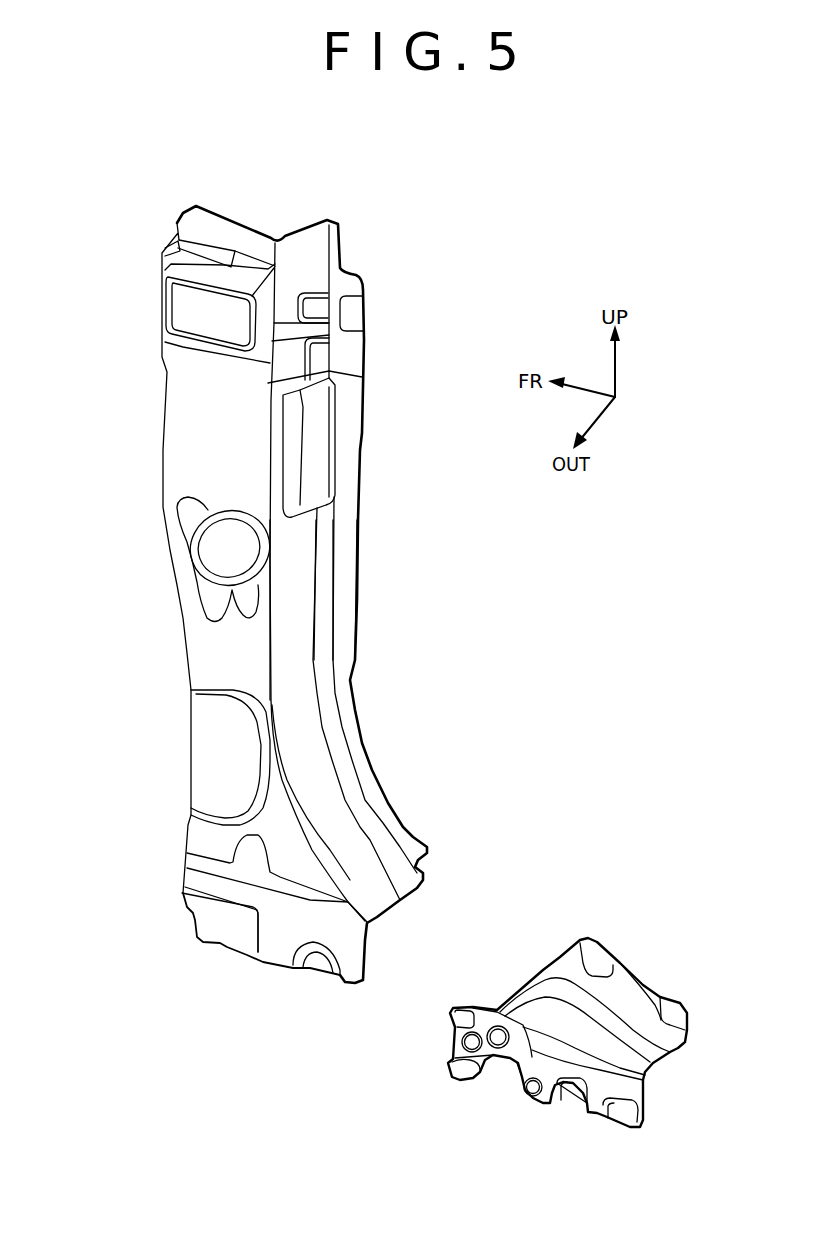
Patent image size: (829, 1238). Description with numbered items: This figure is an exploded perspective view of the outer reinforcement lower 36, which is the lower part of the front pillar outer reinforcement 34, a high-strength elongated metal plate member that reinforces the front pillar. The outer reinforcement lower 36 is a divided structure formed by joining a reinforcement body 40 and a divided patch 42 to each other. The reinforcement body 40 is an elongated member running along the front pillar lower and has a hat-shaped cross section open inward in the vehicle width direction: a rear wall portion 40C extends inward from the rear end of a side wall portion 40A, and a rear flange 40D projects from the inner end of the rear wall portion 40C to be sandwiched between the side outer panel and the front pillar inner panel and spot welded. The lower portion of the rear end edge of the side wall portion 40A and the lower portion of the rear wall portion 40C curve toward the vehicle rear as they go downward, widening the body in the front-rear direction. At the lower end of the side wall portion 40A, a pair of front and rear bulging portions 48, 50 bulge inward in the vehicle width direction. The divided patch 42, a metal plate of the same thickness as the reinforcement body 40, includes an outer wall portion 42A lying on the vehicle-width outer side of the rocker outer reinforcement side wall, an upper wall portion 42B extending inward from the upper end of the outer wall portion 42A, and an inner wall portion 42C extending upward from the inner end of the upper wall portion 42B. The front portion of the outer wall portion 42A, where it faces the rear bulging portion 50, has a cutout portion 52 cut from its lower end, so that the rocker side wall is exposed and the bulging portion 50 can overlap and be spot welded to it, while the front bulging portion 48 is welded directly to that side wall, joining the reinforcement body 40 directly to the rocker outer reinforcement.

The front pillar outer reinforcement 34 is at (386, 694).
The outer reinforcement lower 36 is at (581, 646).
The reinforcement body 40 is at (136, 460).
The side wall portion 40A is at (207, 647).
The rear wall portion 40C is at (300, 563).
The rear flange 40D is at (343, 618).
The front bulging portion 48 is at (223, 927).
The rear bulging portion 50 is at (322, 962).
The divided patch 42 is at (634, 939).
The outer wall portion 42A is at (577, 1080).
The upper wall portion 42B is at (553, 997).
The inner wall portion 42C is at (642, 1005).
The cutout portion 52 is at (518, 1073).